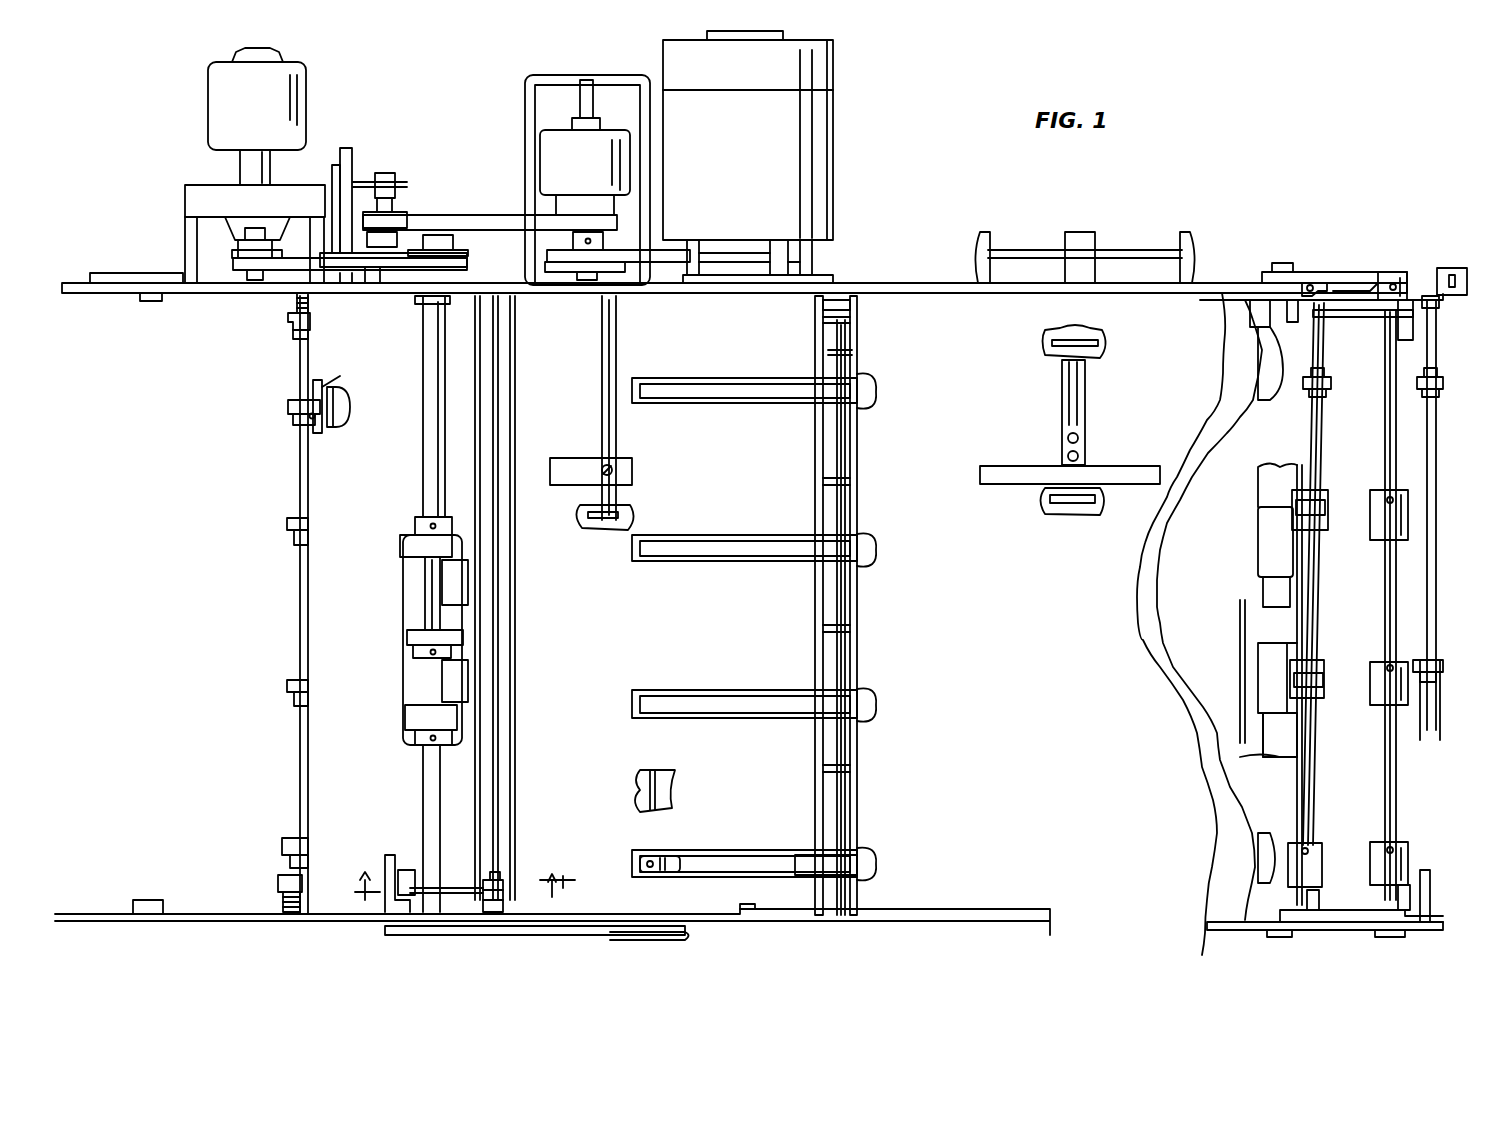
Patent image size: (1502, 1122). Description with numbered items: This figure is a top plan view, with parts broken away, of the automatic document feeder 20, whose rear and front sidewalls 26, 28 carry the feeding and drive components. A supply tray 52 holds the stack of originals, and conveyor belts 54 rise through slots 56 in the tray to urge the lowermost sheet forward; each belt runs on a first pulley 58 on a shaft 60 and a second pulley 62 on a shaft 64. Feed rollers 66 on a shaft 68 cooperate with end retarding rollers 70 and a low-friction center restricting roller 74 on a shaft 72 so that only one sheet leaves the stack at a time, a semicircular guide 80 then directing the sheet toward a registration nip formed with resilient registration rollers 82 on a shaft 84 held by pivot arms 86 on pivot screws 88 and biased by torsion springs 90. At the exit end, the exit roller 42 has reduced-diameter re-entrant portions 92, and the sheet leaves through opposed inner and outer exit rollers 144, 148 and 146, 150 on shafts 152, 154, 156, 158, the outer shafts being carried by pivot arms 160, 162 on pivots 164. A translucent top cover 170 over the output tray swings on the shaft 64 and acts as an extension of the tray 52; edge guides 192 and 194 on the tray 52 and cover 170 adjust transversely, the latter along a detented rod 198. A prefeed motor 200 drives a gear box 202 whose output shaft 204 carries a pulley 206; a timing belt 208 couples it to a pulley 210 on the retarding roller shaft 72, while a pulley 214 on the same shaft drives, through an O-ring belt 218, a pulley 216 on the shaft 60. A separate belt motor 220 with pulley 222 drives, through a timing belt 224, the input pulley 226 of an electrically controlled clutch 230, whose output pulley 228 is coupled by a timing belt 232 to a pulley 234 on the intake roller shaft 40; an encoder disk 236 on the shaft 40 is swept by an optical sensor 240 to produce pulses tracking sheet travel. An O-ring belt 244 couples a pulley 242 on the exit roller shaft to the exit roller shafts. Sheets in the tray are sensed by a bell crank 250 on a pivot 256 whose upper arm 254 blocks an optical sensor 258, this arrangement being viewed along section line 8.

The section line 8- 8 is at (452, 875).
The document feeder 20 is at (936, 256).
The rear sidewall 26 is at (893, 283).
The front sidewall 28 is at (330, 918).
The shaft 40 is at (400, 212).
The exit roller 42 is at (1263, 556).
The supply tray 52 is at (740, 912).
The conveyor belts 54 is at (708, 384).
The slots 56 is at (760, 403).
The first pulley 58 is at (672, 858).
The shaft 60 is at (635, 798).
The second pulley 62 is at (810, 875).
The shaft 64 is at (857, 810).
The feed rollers 66 is at (468, 590).
The shaft 68 is at (480, 625).
The retarding rollers 70 is at (400, 546).
The shaft 72 is at (425, 610).
The restricting roller 74 is at (407, 638).
The semicircular guide 80 is at (313, 390).
The registration rollers 82 is at (288, 410).
The shaft 84 is at (298, 425).
The pivot arms 86 is at (310, 322).
The pivot screws 88 is at (294, 339).
The torsion springs 90 is at (290, 322).
The re-entrant portions 92 is at (1262, 470).
The inner exit rollers 144 is at (1372, 540).
The inner exit rollers 146 is at (1292, 500).
The outer exit rollers 148 is at (1443, 386).
The outer exit rollers 150 is at (1331, 388).
The shaft 152 is at (1396, 810).
The shaft 154 is at (1302, 775).
The shaft 156 is at (1436, 590).
The shaft 158 is at (1318, 808).
The pivot arms 160 is at (1436, 360).
The pivot arms 162 is at (1368, 325).
The pivots 164 is at (1413, 335).
The top cover 170 is at (1222, 293).
The edge guide 192 is at (572, 492).
The edge guide 194 is at (1135, 490).
The rod 198 is at (1085, 412).
The prefeed motor 200 is at (306, 75).
The gear box 202 is at (195, 185).
The output shaft 204 is at (268, 235).
The pulley 206 is at (232, 264).
The timing belt 208 is at (270, 290).
The pulley 210 is at (423, 296).
The pulley 214 is at (392, 932).
The pulley 216 is at (680, 938).
The O-ring belt 218 is at (590, 900).
The belt motor 220 is at (835, 130).
The pulley 222 is at (740, 292).
The timing belt 224 is at (670, 296).
The input pulley 226 is at (560, 292).
The output pulley 228 is at (614, 208).
The clutch 230 is at (550, 155).
The timing belt 232 is at (492, 222).
The pulley 234 is at (410, 232).
The encoder disk 236 is at (395, 182).
The optical sensor 240 is at (352, 172).
The pulley 242 is at (1268, 270).
The O-ring belt 244 is at (1390, 272).
The bell crank 250 is at (503, 888).
The upper arm 254 is at (440, 872).
The pivot 256 is at (500, 872).
The optical sensor 258 is at (410, 870).